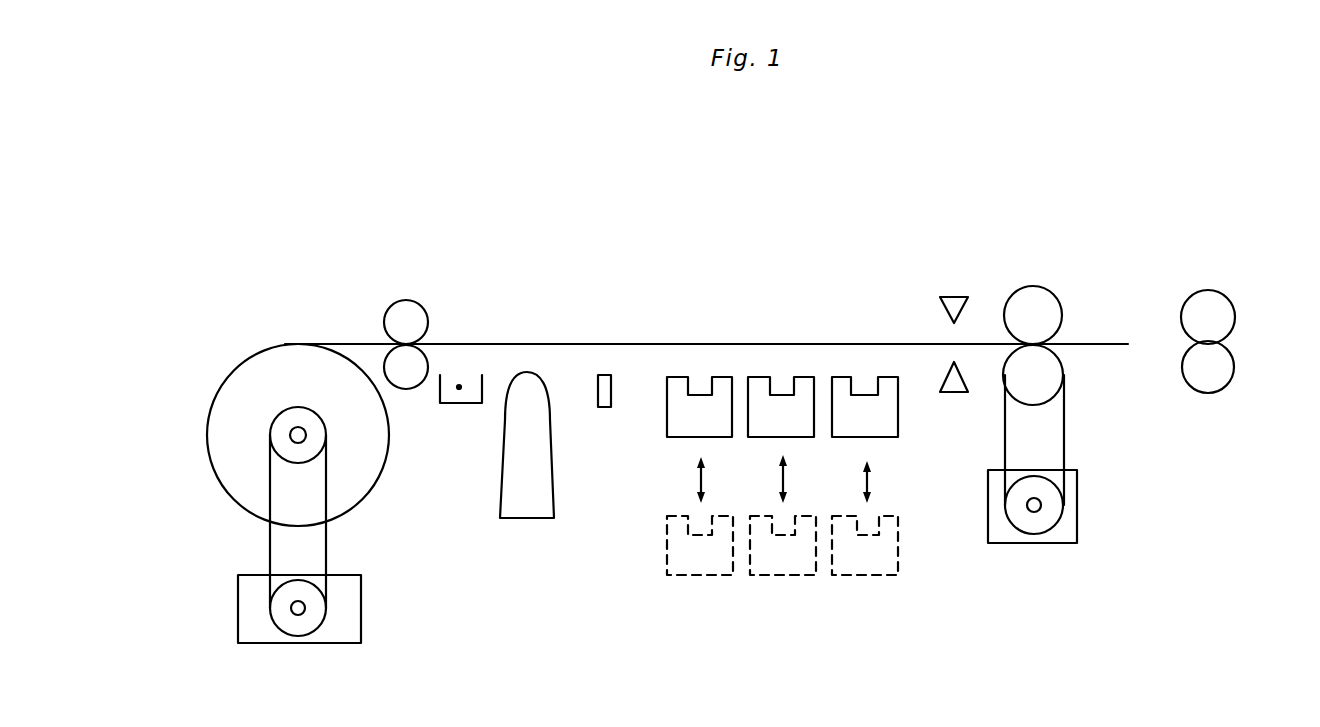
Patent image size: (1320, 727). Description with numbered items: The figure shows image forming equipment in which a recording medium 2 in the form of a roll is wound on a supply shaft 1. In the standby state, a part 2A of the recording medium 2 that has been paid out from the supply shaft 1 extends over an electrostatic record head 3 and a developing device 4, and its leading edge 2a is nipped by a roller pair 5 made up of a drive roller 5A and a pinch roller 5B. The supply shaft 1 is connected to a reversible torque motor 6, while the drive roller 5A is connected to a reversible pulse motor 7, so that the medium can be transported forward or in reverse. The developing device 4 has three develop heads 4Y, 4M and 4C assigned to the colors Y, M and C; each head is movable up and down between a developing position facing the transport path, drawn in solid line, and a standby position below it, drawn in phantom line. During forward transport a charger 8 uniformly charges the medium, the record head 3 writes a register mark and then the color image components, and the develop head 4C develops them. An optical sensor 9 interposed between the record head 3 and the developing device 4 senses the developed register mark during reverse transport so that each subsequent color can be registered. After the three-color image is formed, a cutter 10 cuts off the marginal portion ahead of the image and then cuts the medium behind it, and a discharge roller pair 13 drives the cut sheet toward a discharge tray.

The supply shaft 1 is at (292, 435).
The recording medium 2 is at (253, 378).
The part of the recording medium 2A is at (920, 344).
The leading edge 2a is at (1093, 344).
The electrostatic record head 3 is at (532, 372).
The developing device 4 is at (821, 447).
The develop head 4C is at (683, 377).
The develop head 4M is at (764, 377).
The develop head 4Y is at (846, 377).
The roller pair 5 is at (1076, 310).
The drive roller 5A is at (1045, 403).
The pinch roller 5B is at (1062, 295).
The reversible torque motor 6 is at (238, 604).
The reversible pulse motor 7 is at (1078, 520).
The charger 8 is at (463, 404).
The optical sensor 9 is at (604, 375).
The cutter 10 is at (957, 290).
The discharge roller pair 13 is at (1223, 288).